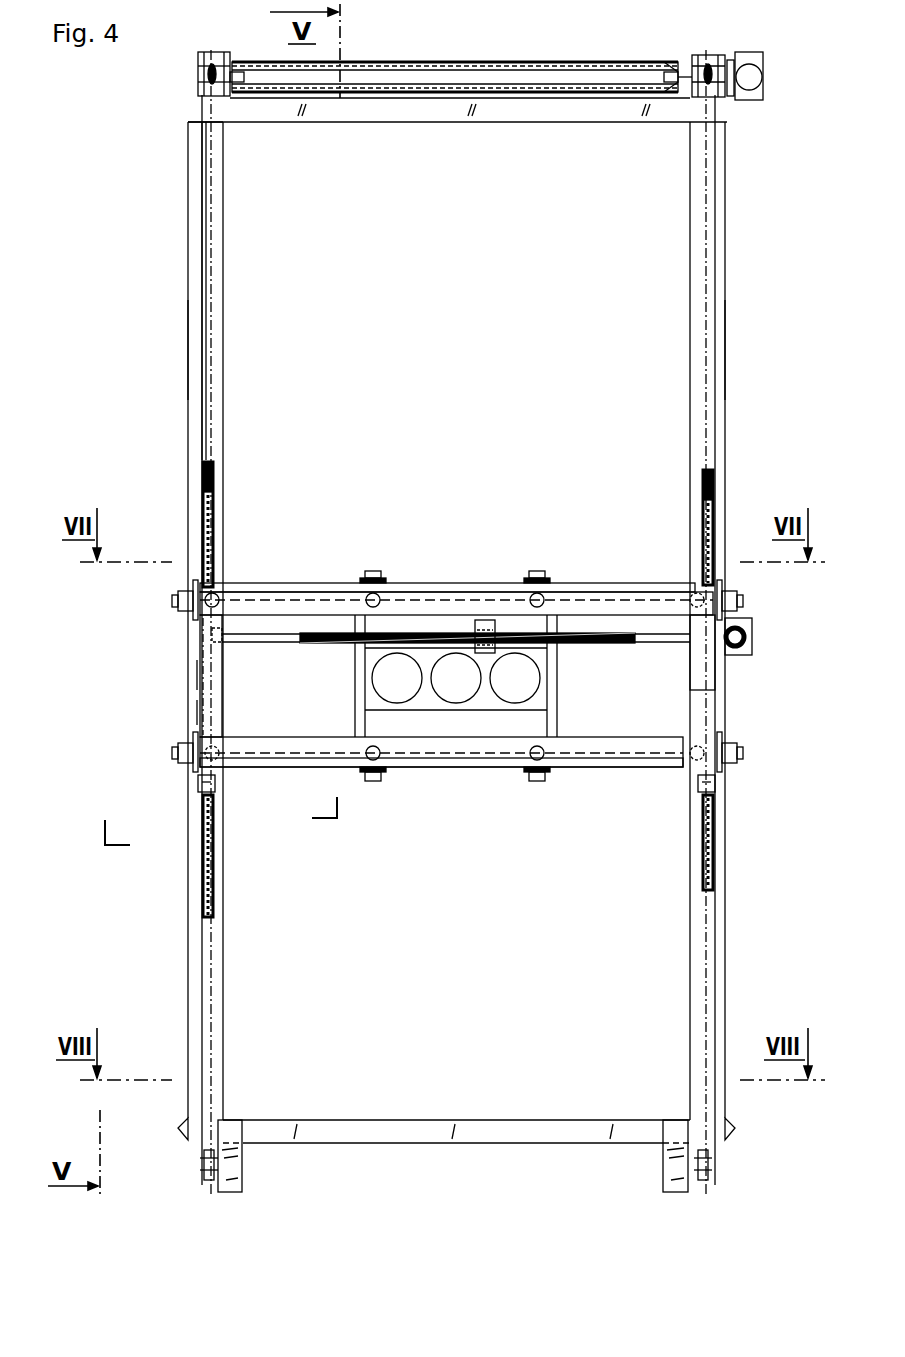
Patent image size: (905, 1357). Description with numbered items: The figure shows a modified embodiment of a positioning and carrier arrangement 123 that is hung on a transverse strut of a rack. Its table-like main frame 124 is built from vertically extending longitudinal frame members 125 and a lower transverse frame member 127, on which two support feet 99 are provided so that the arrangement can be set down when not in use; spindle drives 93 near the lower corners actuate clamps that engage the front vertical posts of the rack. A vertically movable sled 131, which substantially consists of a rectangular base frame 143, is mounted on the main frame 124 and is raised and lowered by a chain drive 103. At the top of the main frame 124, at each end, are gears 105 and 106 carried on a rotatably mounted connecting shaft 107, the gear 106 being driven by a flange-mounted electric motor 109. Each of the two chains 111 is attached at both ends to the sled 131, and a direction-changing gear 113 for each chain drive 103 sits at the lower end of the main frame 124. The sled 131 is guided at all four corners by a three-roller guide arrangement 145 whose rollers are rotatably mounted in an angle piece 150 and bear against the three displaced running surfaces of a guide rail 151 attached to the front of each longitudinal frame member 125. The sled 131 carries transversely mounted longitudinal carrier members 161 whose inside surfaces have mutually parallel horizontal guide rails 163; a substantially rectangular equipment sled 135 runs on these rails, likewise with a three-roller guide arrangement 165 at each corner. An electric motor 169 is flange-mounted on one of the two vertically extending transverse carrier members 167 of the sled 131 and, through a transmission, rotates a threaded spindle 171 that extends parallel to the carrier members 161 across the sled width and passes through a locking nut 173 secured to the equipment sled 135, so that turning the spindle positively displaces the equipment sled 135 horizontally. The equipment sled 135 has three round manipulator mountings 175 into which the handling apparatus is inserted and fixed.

The spindle drive 93 is at (183, 1138).
The support foot 99 is at (240, 1172).
The chain drive 103 is at (206, 470).
The gear 105 is at (215, 66).
The gear 106 is at (710, 66).
The connecting shaft 107 is at (487, 72).
The electric motor 109 is at (750, 64).
The chain 111 is at (205, 500).
The direction-changing gear 113 is at (206, 1180).
The positioning and carrier arrangement 123 is at (178, 120).
The table-like main frame 124 is at (186, 186).
The longitudinal frame member 125 is at (222, 260).
The lower transverse frame member 127 is at (447, 1130).
The vertically movable sled 131 is at (195, 676).
The equipment sled 135 is at (430, 618).
The rectangular base frame 143 is at (195, 712).
The three-roller guide arrangement 145 is at (190, 774).
The angle piece 150 is at (192, 608).
The guide rail 151 is at (188, 340).
The longitudinal carrier member 161 is at (262, 598).
The guide rail 163 is at (644, 586).
The three-roller guide arrangement 165 is at (552, 580).
The transverse carrier member 167 is at (222, 684).
The electric motor 169 is at (752, 628).
The threaded spindle 171 is at (314, 632).
The locking nut 173 is at (485, 620).
The manipulator mounting 175 is at (408, 692).